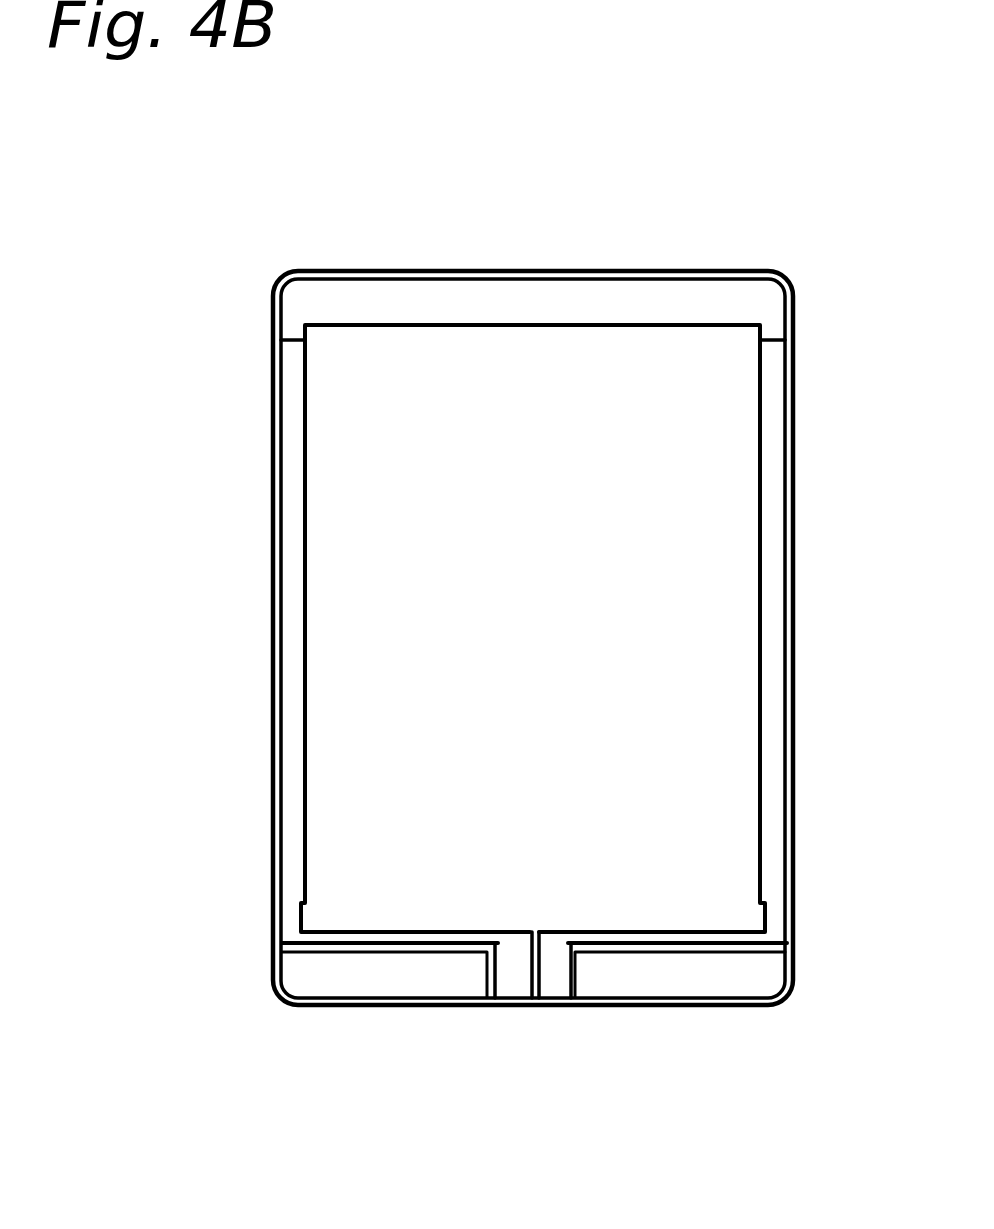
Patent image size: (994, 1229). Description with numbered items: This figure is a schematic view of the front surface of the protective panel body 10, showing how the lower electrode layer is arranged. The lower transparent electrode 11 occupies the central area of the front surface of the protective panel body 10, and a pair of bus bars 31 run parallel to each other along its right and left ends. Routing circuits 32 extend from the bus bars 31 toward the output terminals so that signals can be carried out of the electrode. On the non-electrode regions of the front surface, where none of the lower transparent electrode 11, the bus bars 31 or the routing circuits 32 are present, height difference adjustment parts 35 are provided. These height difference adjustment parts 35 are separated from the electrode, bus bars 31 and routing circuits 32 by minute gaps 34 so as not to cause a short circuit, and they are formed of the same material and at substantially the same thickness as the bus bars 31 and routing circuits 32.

The protective panel body 10 is at (727, 260).
The lower transparent electrode 11 is at (705, 732).
The bus bars 31 is at (293, 618).
The routing circuits 32 is at (512, 973).
The minute gaps 34 is at (287, 343).
The height difference adjustment parts 35 is at (530, 297).